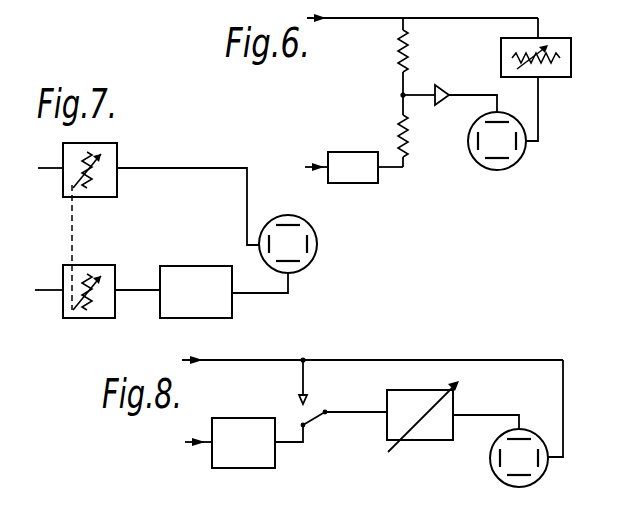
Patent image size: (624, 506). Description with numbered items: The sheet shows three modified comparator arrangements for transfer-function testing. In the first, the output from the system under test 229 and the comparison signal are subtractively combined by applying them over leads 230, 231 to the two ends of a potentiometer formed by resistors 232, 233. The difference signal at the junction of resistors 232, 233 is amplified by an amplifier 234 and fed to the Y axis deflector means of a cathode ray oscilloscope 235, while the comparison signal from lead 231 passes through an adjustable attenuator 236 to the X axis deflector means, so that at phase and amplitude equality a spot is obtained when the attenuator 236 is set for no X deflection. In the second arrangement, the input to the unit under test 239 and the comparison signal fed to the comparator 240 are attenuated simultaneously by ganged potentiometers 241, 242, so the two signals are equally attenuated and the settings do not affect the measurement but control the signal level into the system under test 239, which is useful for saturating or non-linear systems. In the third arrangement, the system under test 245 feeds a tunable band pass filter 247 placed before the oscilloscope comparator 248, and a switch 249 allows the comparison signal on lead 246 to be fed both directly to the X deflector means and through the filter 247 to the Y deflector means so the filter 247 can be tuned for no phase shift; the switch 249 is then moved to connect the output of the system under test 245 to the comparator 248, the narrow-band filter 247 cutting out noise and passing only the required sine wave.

In FIG. 6, the system under test output 229 is at (345, 152).
In FIG. 6, the lead 230 is at (403, 167).
In FIG. 6, the lead 231 is at (390, 19).
In FIG. 6, the resistor 232 is at (410, 136).
In FIG. 6, the resistor 233 is at (410, 59).
In FIG. 6, the amplifier 234 is at (446, 89).
In FIG. 6, the cathode ray oscilloscope 235 is at (519, 163).
In FIG. 6, the adjustable attenuator 236 is at (556, 78).
In FIG. 7, the unit under test 239 is at (197, 266).
In FIG. 7, the comparator 240 is at (317, 244).
In FIG. 7, the potentiometer 241 is at (117, 152).
In FIG. 7, the potentiometer 242 is at (106, 265).
In FIG. 8, the system under test 245 is at (275, 452).
In FIG. 8, the lead 246 is at (268, 361).
In FIG. 8, the tunable band pass filter 247 is at (410, 390).
In FIG. 8, the oscilloscope comparator 248 is at (490, 466).
In FIG. 8, the switch 249 is at (310, 420).